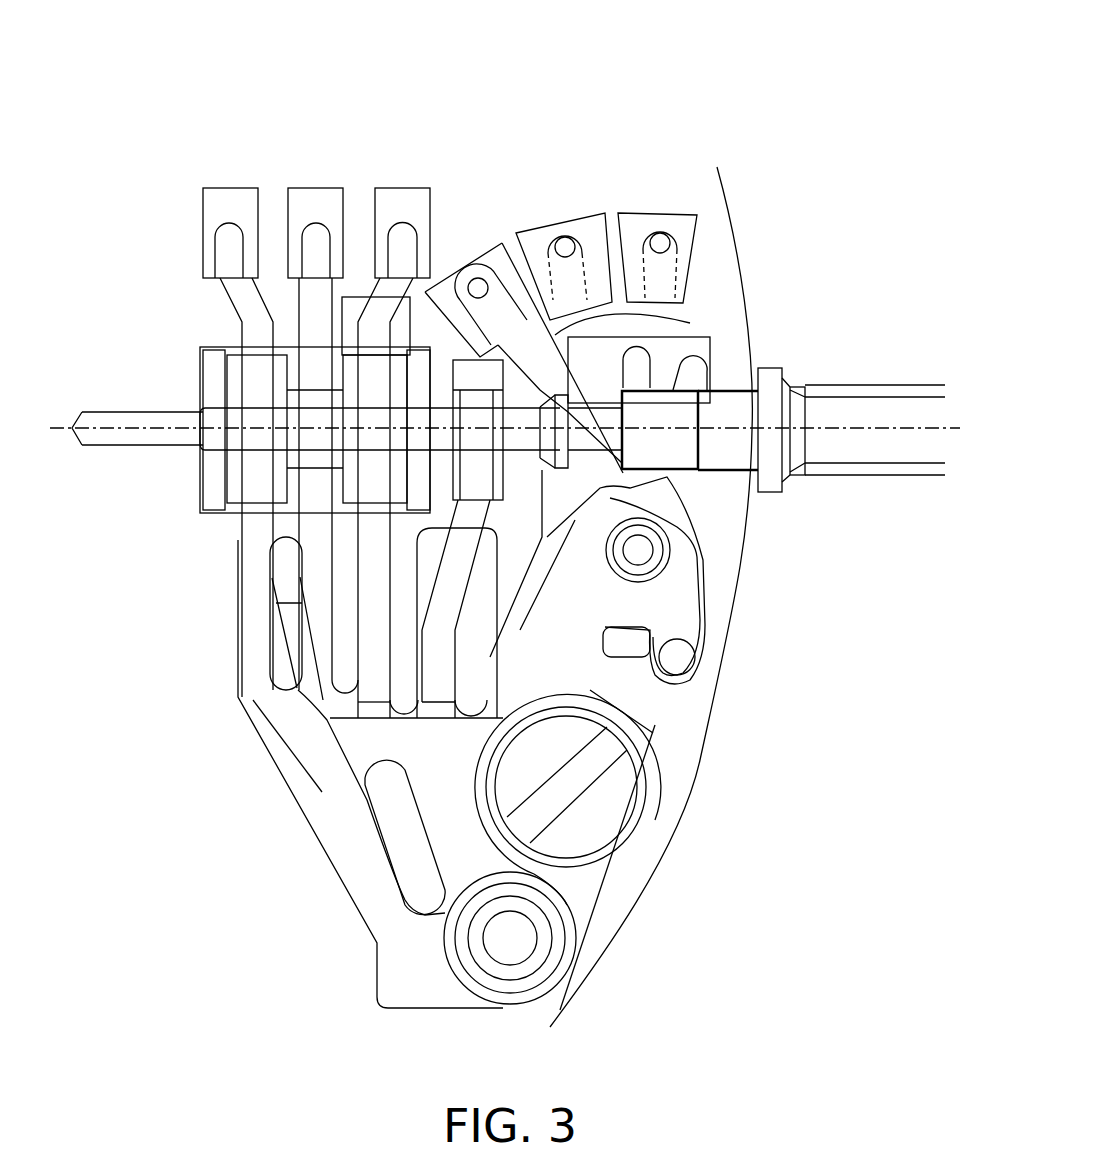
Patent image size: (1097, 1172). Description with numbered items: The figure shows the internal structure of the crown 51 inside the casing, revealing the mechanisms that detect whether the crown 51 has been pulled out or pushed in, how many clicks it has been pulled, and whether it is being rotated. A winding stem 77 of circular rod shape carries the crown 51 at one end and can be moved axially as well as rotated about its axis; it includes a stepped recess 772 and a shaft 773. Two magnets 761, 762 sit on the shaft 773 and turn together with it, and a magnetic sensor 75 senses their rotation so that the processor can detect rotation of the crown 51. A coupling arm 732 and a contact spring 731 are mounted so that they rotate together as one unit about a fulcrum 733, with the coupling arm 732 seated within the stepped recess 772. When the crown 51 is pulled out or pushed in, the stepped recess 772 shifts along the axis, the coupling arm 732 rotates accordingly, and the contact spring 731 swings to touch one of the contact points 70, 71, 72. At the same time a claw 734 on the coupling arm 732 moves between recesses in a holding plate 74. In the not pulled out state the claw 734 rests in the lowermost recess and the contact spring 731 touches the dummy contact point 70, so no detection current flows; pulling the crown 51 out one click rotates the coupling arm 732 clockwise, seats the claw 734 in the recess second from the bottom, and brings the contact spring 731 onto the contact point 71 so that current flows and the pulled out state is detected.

The crown 51 is at (618, 95).
The contact point 70 is at (493, 240).
The contact point 71 is at (555, 220).
The contact point 72 is at (663, 210).
The contact spring 731 is at (457, 263).
The coupling arm 732 is at (690, 323).
The fulcrum 733 is at (690, 607).
The claw 734 is at (393, 720).
The holding plate 74 is at (407, 765).
The magnetic sensor 75 is at (233, 343).
The magnet 761 is at (255, 508).
The magnet 762 is at (350, 508).
The winding stem 77 is at (720, 472).
The stepped recess 772 is at (690, 517).
The shaft 773 is at (135, 452).